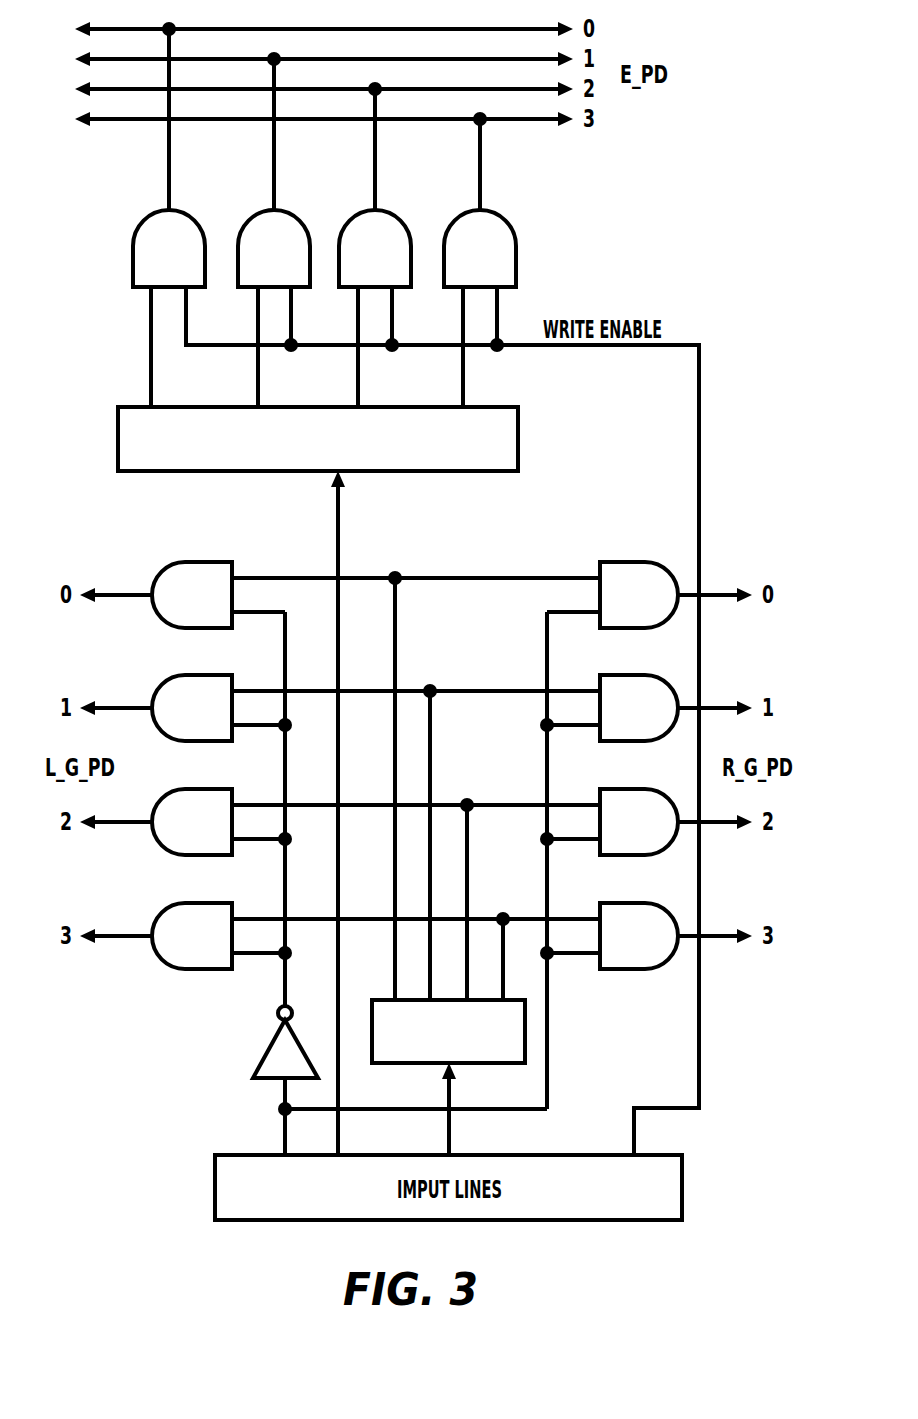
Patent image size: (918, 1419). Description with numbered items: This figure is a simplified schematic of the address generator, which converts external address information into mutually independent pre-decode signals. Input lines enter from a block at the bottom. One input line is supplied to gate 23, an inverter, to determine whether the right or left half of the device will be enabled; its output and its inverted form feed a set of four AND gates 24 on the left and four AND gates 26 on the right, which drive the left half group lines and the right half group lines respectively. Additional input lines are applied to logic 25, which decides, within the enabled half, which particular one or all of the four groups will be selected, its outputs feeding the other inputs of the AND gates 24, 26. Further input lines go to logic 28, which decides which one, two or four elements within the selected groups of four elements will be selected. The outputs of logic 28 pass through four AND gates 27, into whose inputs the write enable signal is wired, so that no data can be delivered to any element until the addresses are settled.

The gate 23 is at (267, 1056).
The left half group AND gates 24 is at (178, 562).
The logic 25 is at (400, 1063).
The right half group AND gates 26 is at (625, 562).
The gates 27 is at (195, 218).
The logic 28 is at (118, 437).